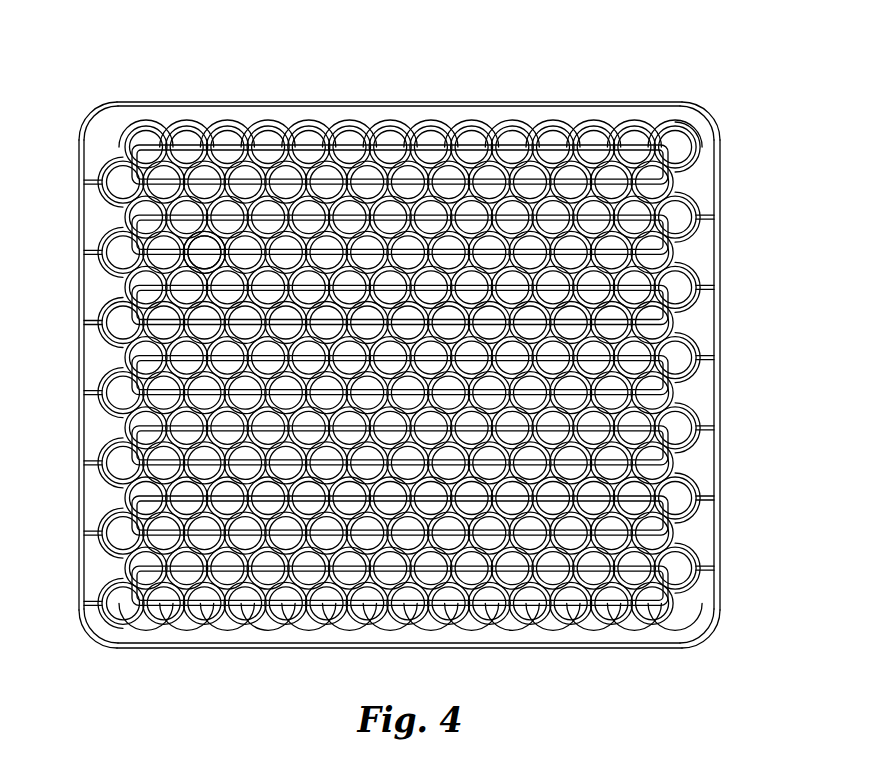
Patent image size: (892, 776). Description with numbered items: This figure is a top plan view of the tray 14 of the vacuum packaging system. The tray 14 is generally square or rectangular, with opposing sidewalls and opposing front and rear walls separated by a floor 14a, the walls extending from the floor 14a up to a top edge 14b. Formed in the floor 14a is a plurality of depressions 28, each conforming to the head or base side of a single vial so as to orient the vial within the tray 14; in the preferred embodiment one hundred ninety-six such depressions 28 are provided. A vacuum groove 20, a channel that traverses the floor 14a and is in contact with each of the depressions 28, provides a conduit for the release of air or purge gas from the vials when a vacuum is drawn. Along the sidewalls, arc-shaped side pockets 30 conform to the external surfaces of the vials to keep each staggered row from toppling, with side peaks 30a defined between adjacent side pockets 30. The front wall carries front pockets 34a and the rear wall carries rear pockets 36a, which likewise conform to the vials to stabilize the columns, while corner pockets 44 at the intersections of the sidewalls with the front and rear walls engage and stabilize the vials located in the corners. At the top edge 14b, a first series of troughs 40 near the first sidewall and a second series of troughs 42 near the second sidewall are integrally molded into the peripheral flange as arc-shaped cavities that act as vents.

The tray 14 is at (596, 100).
The floor 14a is at (345, 135).
The top edge 14b is at (550, 640).
The vacuum groove 20 is at (687, 477).
The depressions 28 is at (210, 245).
The side pockets 30 is at (105, 243).
The side peaks 30a is at (712, 185).
The front pockets 34a is at (322, 628).
The rear pockets 36a is at (470, 135).
The first series of troughs 40 is at (712, 408).
The second series of troughs 42 is at (83, 373).
The corner pockets 44 is at (128, 130).